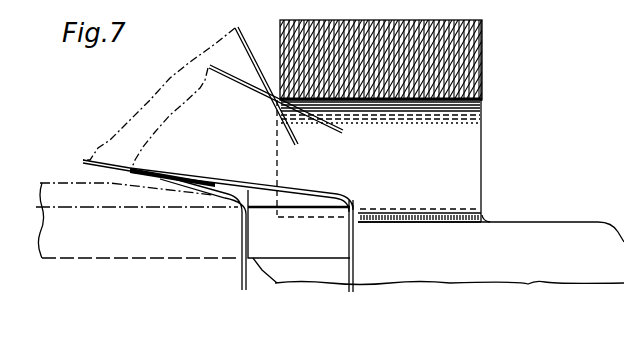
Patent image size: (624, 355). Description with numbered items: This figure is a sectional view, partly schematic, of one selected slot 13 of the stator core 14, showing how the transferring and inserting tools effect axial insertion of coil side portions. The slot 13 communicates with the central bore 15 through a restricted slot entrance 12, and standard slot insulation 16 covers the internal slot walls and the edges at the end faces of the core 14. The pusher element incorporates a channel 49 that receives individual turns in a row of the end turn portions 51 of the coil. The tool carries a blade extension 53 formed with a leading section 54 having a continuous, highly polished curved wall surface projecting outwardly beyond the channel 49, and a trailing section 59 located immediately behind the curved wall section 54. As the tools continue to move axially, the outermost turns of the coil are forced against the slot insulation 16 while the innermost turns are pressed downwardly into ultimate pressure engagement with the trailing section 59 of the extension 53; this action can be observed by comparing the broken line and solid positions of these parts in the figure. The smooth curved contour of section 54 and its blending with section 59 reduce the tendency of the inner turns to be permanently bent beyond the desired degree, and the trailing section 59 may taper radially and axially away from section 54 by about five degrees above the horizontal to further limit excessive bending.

The restricted slot entrance 12 is at (440, 210).
The selected slot 13 is at (468, 145).
The stator core 14 is at (465, 58).
The central bore 15 is at (484, 221).
The slot insulation 16 is at (275, 60).
The channel 49 is at (524, 235).
The end turn portions 51 is at (360, 247).
The blade extension 53 is at (152, 240).
The leading section 54 is at (357, 199).
The trailing section 59 is at (112, 182).